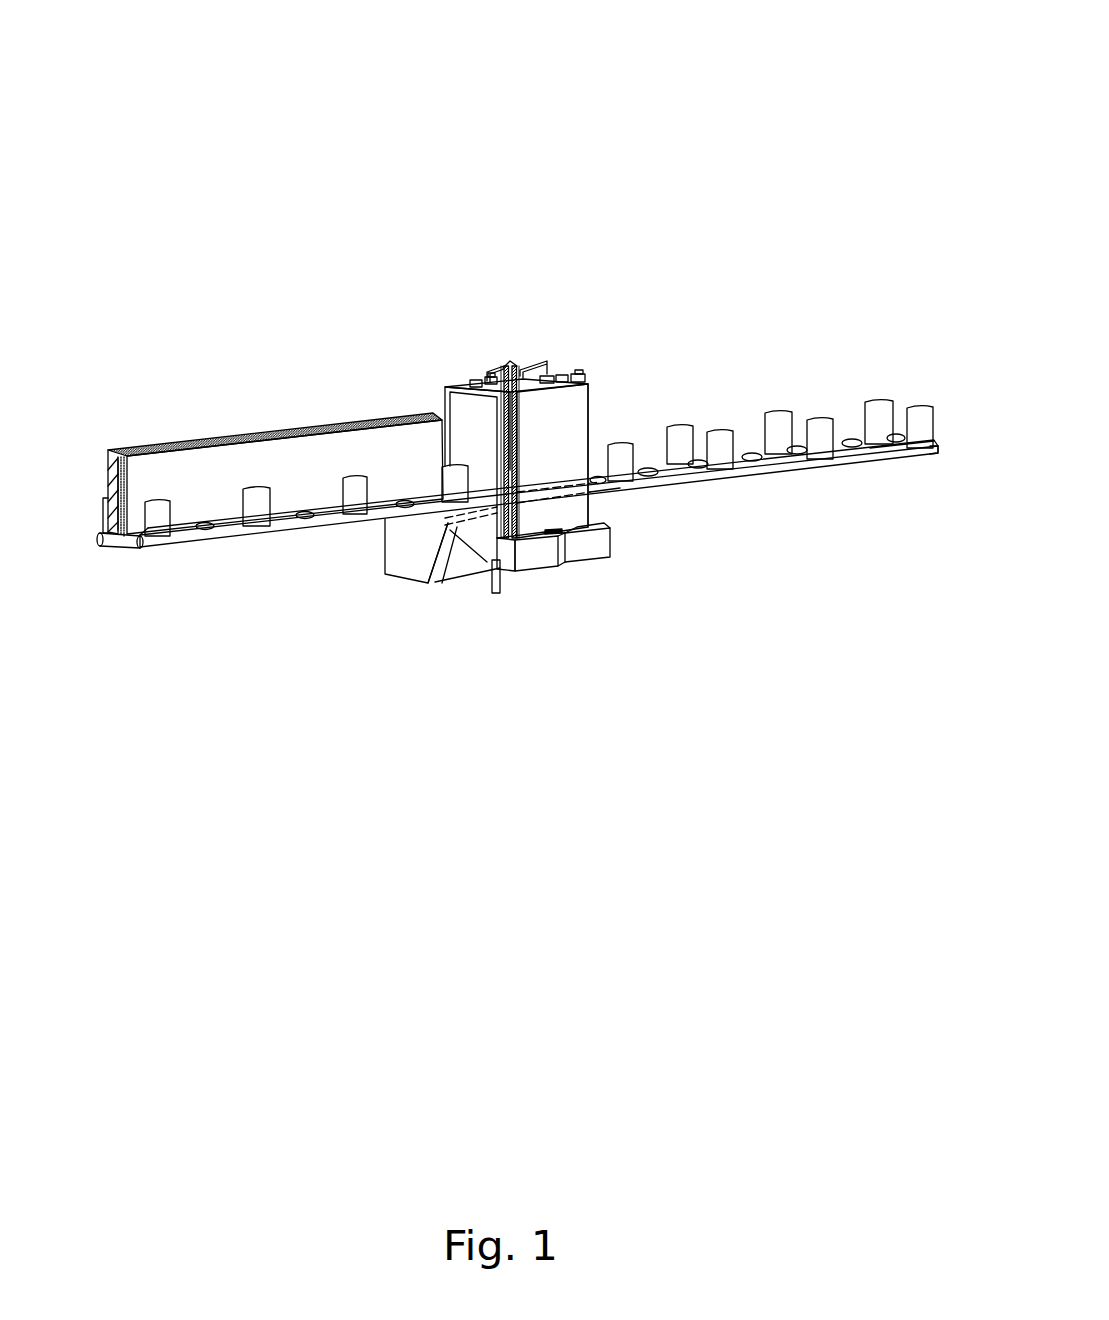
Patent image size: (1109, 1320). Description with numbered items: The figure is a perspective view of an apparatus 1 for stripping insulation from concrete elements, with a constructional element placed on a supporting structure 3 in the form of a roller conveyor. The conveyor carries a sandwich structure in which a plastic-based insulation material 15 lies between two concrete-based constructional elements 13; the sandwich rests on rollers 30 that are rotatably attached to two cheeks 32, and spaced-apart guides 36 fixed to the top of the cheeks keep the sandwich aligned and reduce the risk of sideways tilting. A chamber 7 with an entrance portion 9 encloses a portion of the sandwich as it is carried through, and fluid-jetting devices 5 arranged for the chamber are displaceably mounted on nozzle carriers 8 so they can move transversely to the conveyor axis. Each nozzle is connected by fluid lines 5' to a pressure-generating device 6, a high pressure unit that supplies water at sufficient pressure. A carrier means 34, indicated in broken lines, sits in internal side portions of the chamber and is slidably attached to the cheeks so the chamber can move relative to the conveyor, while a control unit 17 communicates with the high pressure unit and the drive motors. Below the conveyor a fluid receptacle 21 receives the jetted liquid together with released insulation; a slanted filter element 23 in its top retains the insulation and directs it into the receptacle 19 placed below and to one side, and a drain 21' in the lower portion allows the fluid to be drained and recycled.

The apparatus 1 is at (700, 192).
The supporting structure 3 is at (737, 490).
The fluid-jetting device 5 is at (529, 406).
The fluid line 5' is at (482, 405).
The pressure-generating device 6 is at (535, 572).
The chamber 7 is at (572, 463).
The nozzle carrier 8 is at (557, 378).
The entrance portion 9 is at (456, 414).
The constructional element 13 is at (135, 473).
The insulation material 15 is at (112, 480).
The control unit 17 is at (597, 563).
The receptacle 19 is at (385, 555).
The fluid receptacle 21 is at (512, 637).
The drain 21' is at (532, 640).
The filter element 23 is at (440, 575).
The roller 30 is at (880, 448).
The cheek 32 is at (930, 456).
The carrier means 34 is at (550, 502).
The guide 36 is at (172, 517).